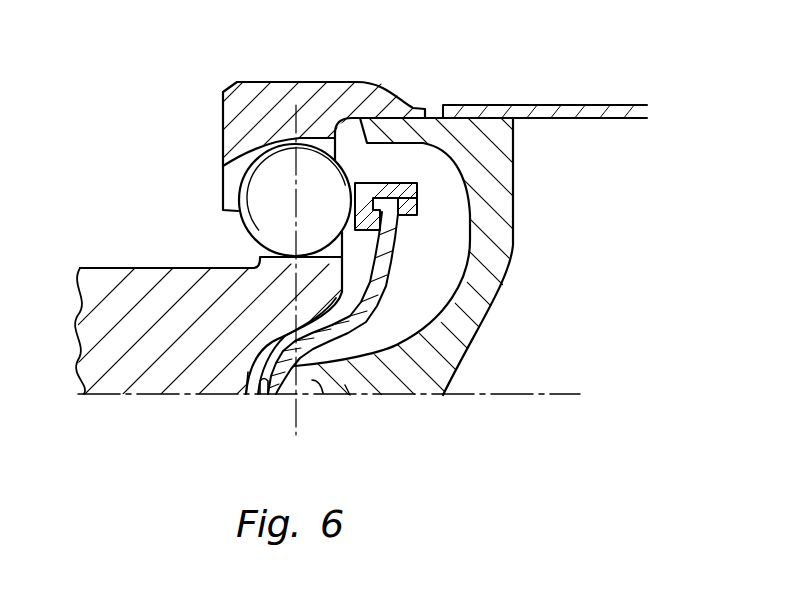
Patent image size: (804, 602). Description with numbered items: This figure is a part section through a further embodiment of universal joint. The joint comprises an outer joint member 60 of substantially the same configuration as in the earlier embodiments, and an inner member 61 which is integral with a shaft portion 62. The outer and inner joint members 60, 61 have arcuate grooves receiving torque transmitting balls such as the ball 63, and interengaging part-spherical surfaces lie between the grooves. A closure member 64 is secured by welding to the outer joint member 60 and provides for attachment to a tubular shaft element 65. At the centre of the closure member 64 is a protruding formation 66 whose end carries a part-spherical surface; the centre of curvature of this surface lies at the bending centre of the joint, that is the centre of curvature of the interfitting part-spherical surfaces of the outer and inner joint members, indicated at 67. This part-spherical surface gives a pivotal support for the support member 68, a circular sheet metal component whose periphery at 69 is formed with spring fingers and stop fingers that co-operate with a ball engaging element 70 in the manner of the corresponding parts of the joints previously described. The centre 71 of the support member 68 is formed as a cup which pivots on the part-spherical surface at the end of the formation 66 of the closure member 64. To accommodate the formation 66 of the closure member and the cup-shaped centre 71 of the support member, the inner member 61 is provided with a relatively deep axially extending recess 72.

The outer joint member 60 is at (313, 92).
The inner member 61 is at (277, 283).
The shaft portion 62 is at (107, 307).
The torque transmitting ball 63 is at (257, 184).
The closure member 64 is at (490, 246).
The tubular shaft element 65 is at (573, 106).
The protruding formation 66 is at (328, 397).
The centre of curvature 67 is at (290, 398).
The support member 68 is at (343, 323).
The periphery of support member 69 is at (395, 210).
The ball engaging element 70 is at (382, 183).
The centre of support member 71 is at (263, 398).
The axially extending recess 72 is at (350, 395).